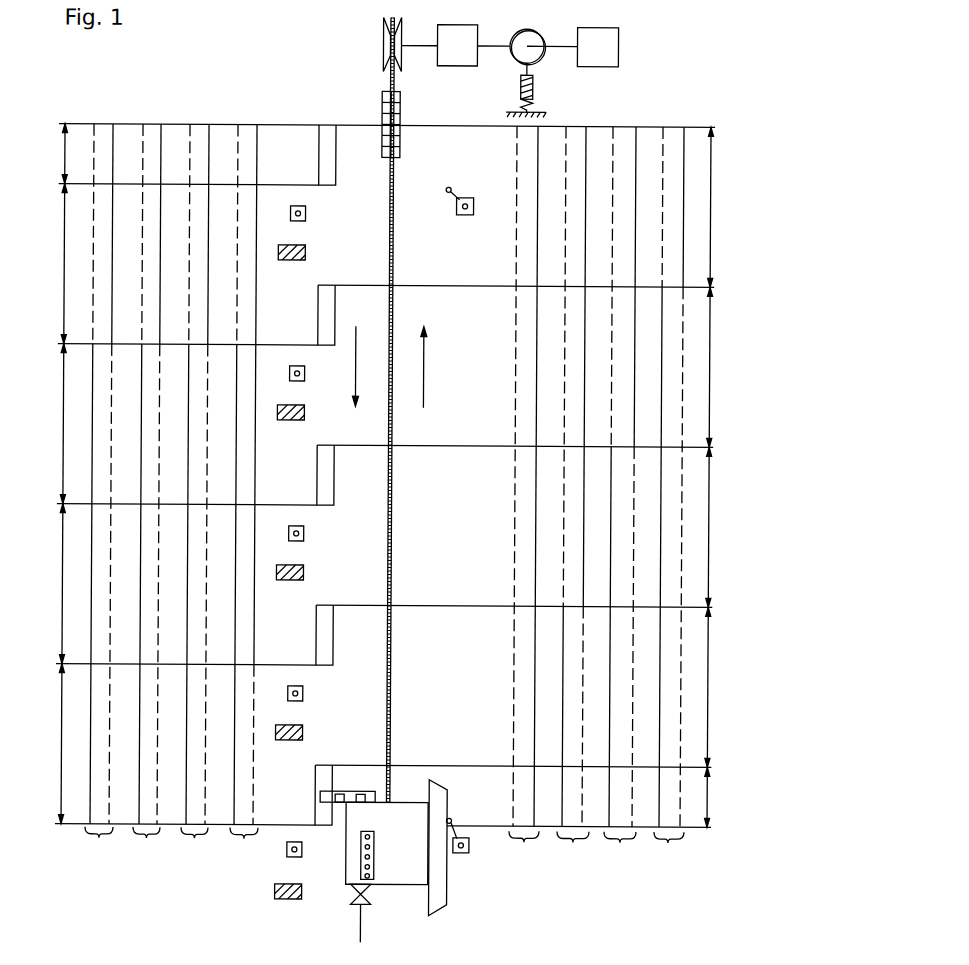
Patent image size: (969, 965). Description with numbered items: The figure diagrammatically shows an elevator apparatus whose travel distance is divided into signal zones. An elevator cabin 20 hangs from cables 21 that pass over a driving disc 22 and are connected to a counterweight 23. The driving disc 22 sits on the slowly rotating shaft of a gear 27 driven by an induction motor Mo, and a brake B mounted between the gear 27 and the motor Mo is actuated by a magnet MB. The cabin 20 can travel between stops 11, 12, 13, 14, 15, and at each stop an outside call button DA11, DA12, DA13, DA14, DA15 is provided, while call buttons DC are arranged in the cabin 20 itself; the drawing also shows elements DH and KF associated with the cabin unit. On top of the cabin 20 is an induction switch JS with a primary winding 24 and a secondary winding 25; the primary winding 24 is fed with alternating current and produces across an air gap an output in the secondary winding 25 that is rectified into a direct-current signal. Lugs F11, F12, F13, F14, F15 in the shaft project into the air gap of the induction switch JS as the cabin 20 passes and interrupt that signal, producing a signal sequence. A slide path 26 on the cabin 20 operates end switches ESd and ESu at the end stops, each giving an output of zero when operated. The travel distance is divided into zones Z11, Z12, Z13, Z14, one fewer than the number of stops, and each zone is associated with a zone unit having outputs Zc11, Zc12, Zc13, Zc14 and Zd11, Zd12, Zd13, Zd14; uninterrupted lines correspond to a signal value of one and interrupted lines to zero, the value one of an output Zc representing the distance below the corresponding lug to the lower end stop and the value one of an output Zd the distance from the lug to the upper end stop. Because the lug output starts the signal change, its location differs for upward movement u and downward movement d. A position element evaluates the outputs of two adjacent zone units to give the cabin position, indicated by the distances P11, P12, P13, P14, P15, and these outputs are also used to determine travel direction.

The elevator cabin 20 is at (413, 885).
The cables 21 is at (392, 538).
The driving disc 22 is at (381, 52).
The counterweight 23 is at (380, 108).
The primary winding 24 is at (340, 793).
The secondary winding 25 is at (365, 793).
The slide path 26 is at (449, 893).
The gear 27 is at (447, 54).
The brake B is at (528, 38).
The induction motor Mo is at (585, 56).
The magnet MB is at (533, 90).
The coupling valve KF is at (365, 910).
The induction switch JS is at (369, 814).
The contact row upper DH is at (376, 839).
The call buttons DC is at (376, 858).
The end switch ESu is at (465, 213).
The end switch ESd is at (463, 847).
The outside call button DA11 is at (304, 850).
The outside call button DA12 is at (304, 694).
The outside call button DA13 is at (304, 534).
The outside call button DA14 is at (304, 374).
The outside call button DA15 is at (304, 214).
The lug F11 is at (317, 800).
The lug F12 is at (334, 656).
The lug F13 is at (334, 500).
The lug F14 is at (334, 330).
The lug F15 is at (334, 184).
The stop 11 is at (304, 893).
The stop 12 is at (304, 734).
The stop 13 is at (304, 574).
The stop 14 is at (304, 414).
The stop 15 is at (304, 254).
The distance P11 is at (376, 745).
The distance P12 is at (377, 635).
The distance P13 is at (378, 475).
The distance P14 is at (379, 315).
The distance P15 is at (379, 206).
The zone unit output Zc11 is at (367, 476).
The zone unit output Zc12 is at (368, 475).
The zone unit output Zc13 is at (368, 475).
The zone unit output Zc14 is at (368, 475).
The zone unit output Zd11 is at (387, 476).
The zone unit output Zd12 is at (387, 475).
The zone unit output Zd13 is at (388, 475).
The zone unit output Zd14 is at (388, 475).
The zone Z11 is at (384, 845).
The zone Z12 is at (384, 844).
The zone Z13 is at (383, 845).
The zone Z14 is at (382, 845).
The upward movement u is at (423, 358).
The downward movement d is at (355, 375).